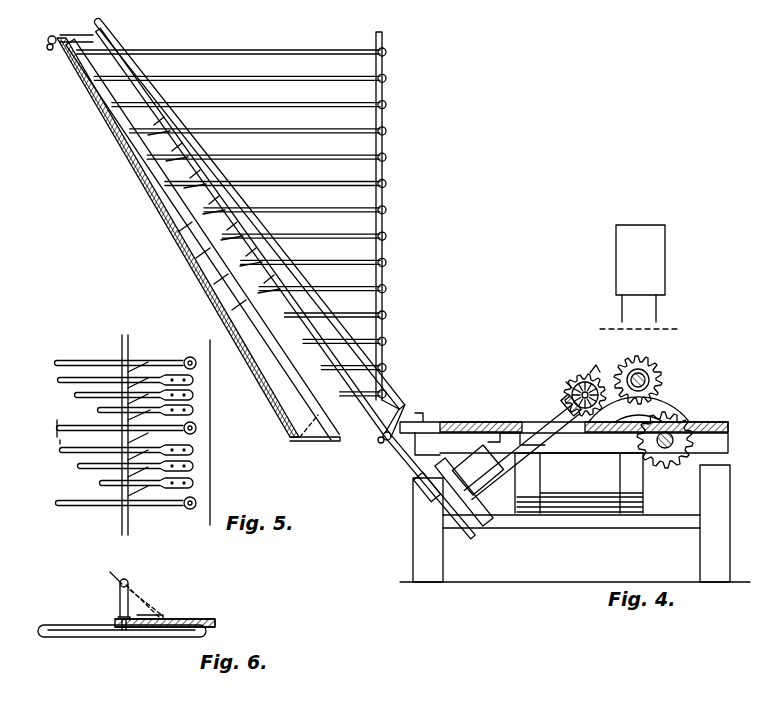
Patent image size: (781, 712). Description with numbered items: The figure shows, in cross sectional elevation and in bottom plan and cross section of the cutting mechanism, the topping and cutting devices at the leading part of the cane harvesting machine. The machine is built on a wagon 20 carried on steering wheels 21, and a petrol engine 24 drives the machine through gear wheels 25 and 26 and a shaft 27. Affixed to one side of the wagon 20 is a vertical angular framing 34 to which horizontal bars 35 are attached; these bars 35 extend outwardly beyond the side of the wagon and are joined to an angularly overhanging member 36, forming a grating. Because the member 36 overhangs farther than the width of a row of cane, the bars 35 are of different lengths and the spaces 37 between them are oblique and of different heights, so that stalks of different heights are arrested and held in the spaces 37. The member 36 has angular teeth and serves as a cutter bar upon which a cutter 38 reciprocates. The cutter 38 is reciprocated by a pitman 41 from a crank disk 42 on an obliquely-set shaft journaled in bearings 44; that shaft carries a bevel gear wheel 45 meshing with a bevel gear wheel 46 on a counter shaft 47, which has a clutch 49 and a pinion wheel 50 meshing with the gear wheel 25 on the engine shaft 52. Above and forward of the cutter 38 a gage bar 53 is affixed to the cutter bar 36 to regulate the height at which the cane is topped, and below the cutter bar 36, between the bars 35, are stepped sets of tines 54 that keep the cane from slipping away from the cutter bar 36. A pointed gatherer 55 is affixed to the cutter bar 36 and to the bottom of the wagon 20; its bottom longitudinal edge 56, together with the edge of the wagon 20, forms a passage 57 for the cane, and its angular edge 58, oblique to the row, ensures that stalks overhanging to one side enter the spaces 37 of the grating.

In FIG. 4, the wagon 20 is at (493, 422).
In FIG. 4, the steering wheels 21 is at (575, 523).
In FIG. 4, the petrol engine 24 is at (639, 323).
In FIG. 4, the gear wheel 25 is at (660, 373).
In FIG. 4, the gear wheel 26 is at (690, 420).
In FIG. 4, the shaft 27 is at (728, 440).
In FIG. 4, the vertical angular framing 34 is at (384, 168).
In FIG. 4, the horizontal bars 35 is at (295, 51).
In FIG. 5, the horizontal bars 35 is at (80, 508).
In FIG. 6, the horizontal bars 35 is at (78, 637).
In FIG. 4, the angularly overhanging member 36 is at (86, 76).
In FIG. 5, the angularly overhanging member 36 is at (208, 435).
In FIG. 6, the angularly overhanging member 36 is at (216, 622).
In FIG. 4, the spaces 37 is at (232, 227).
In FIG. 4, the cutter 38 is at (252, 254).
In FIG. 5, the cutter 38 is at (140, 390).
In FIG. 6, the cutter 38 is at (165, 618).
In FIG. 4, the pitman 41 is at (432, 490).
In FIG. 4, the crank disk 42 is at (487, 528).
In FIG. 4, the bearings 44 is at (496, 472).
In FIG. 4, the bevel gear wheel 45 is at (566, 402).
In FIG. 4, the bevel gear wheel 46 is at (575, 388).
In FIG. 4, the counter shaft 47 is at (583, 378).
In FIG. 4, the clutch 49 is at (556, 436).
In FIG. 4, the pinion wheel 50 is at (592, 372).
In FIG. 4, the engine shaft 52 is at (648, 383).
In FIG. 4, the gage bar 53 is at (292, 312).
In FIG. 5, the gage bar 53 is at (122, 350).
In FIG. 5, the tines 54 is at (66, 478).
In FIG. 6, the tines 54 is at (104, 620).
In FIG. 4, the pointed gatherer 55 is at (190, 258).
In FIG. 4, the bottom longitudinal edge 56 is at (305, 440).
In FIG. 4, the passage 57 is at (364, 439).
In FIG. 4, the angular edge 58 is at (293, 380).